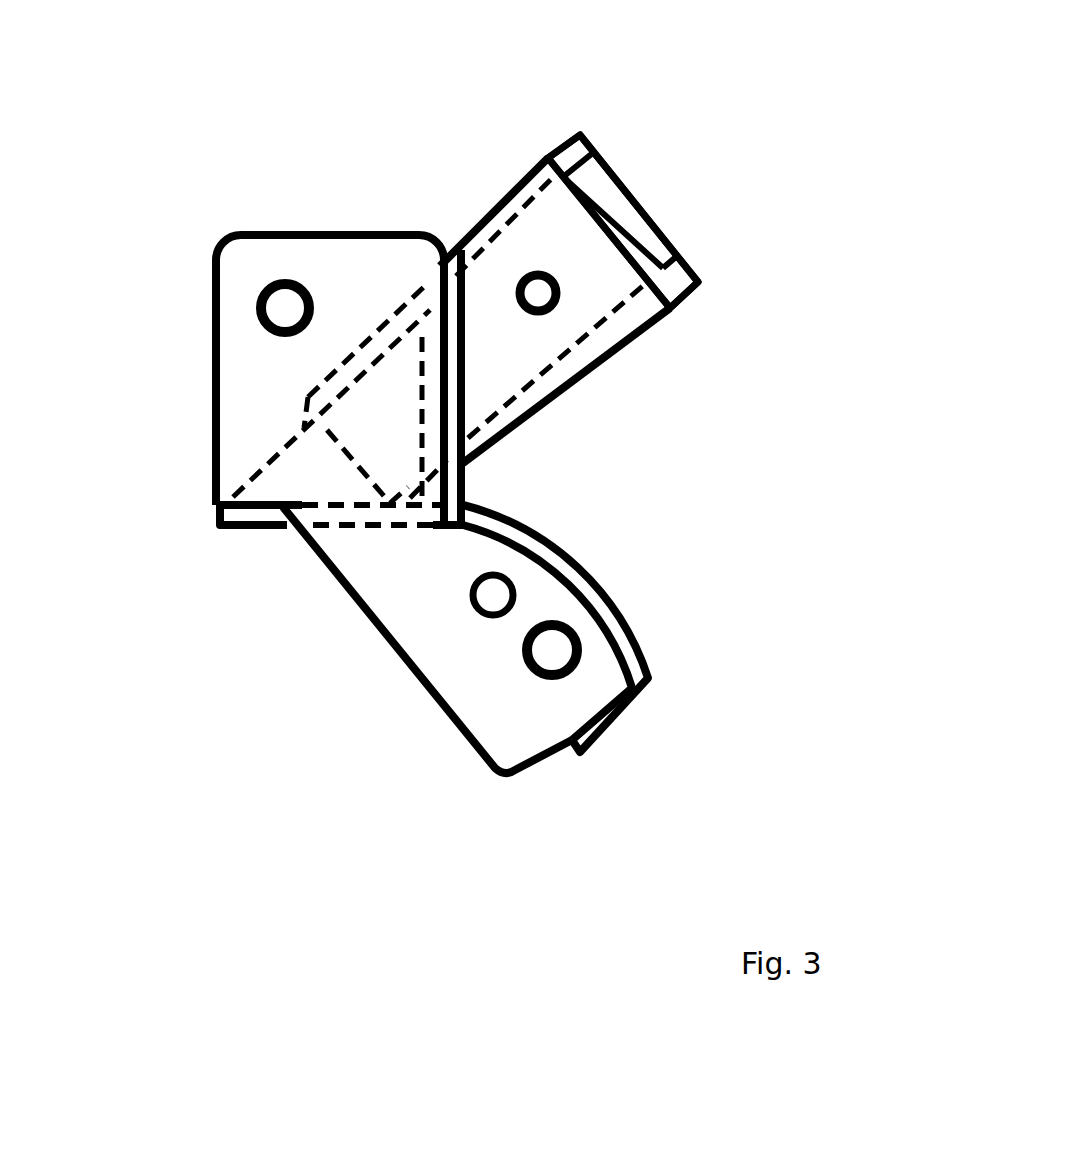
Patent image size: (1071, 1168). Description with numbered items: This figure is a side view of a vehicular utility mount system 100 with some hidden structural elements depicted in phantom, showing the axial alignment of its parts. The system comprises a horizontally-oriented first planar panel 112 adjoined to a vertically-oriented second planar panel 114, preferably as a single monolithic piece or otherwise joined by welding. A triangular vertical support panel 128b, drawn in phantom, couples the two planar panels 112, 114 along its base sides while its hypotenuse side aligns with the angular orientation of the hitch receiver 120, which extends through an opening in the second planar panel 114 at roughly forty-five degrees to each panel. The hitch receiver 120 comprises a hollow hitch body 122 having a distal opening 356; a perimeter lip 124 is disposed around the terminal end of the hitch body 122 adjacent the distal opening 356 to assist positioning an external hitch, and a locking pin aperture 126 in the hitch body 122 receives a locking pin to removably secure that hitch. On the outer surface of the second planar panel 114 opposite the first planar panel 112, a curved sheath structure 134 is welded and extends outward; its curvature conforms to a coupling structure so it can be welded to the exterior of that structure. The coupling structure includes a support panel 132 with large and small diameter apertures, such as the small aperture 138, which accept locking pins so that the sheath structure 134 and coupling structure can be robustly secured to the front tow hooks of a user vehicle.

The vehicular utility mount system 100 is at (173, 867).
The first planar panel 112 is at (240, 525).
The second planar panel 114 is at (447, 490).
The hitch receiver 120 is at (717, 333).
The hollow hitch body 122 is at (510, 212).
The perimeter lip 124 is at (567, 143).
The locking pin aperture 126 is at (563, 302).
The vertical support panel 128b is at (282, 445).
The support panel 132 is at (338, 272).
The curved sheath structure 134 is at (587, 562).
The aperture 138 is at (477, 612).
The distal opening 356 is at (652, 203).